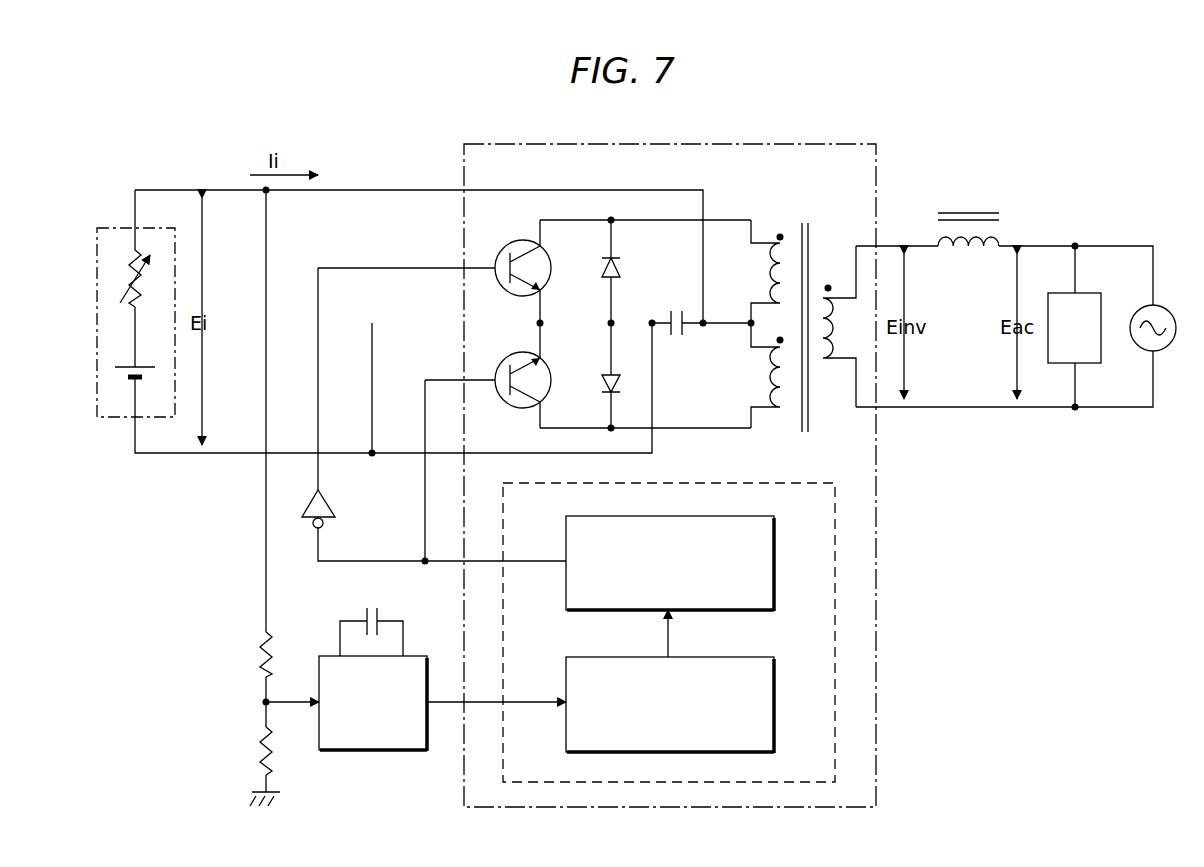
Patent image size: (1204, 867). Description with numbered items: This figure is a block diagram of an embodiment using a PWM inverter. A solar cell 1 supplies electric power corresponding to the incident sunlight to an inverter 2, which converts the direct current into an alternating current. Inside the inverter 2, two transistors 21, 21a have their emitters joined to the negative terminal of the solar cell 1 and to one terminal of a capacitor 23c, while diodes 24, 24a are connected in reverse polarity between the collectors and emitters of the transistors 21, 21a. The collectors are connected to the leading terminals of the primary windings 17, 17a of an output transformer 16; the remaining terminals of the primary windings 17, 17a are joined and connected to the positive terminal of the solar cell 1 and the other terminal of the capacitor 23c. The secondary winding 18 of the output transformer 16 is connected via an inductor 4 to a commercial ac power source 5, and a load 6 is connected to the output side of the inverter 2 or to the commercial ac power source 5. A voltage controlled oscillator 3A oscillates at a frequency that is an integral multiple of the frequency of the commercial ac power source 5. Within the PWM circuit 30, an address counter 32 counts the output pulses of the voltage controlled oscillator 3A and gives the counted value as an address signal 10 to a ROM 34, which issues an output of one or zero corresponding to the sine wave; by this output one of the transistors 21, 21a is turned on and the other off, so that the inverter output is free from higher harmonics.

The solar cell 1 is at (97, 242).
The inverter 2 is at (855, 144).
The voltage controlled oscillator 3A is at (408, 752).
The inductor 4 is at (1004, 225).
The commercial ac power source 5 is at (1173, 308).
The load 6 is at (1102, 299).
The address signal 10 is at (662, 632).
The output transformer 16 is at (790, 314).
The primary winding 17 is at (770, 273).
The primary winding 17a is at (772, 378).
The secondary winding 18 is at (832, 326).
The transistor 21 is at (507, 243).
The transistor 21a is at (504, 407).
The capacitor 23c is at (674, 309).
The diode 24 is at (596, 268).
The diode 24a is at (601, 378).
The PWM circuit 30 is at (631, 612).
The address counter 32 is at (777, 671).
The ROM 34 is at (777, 527).